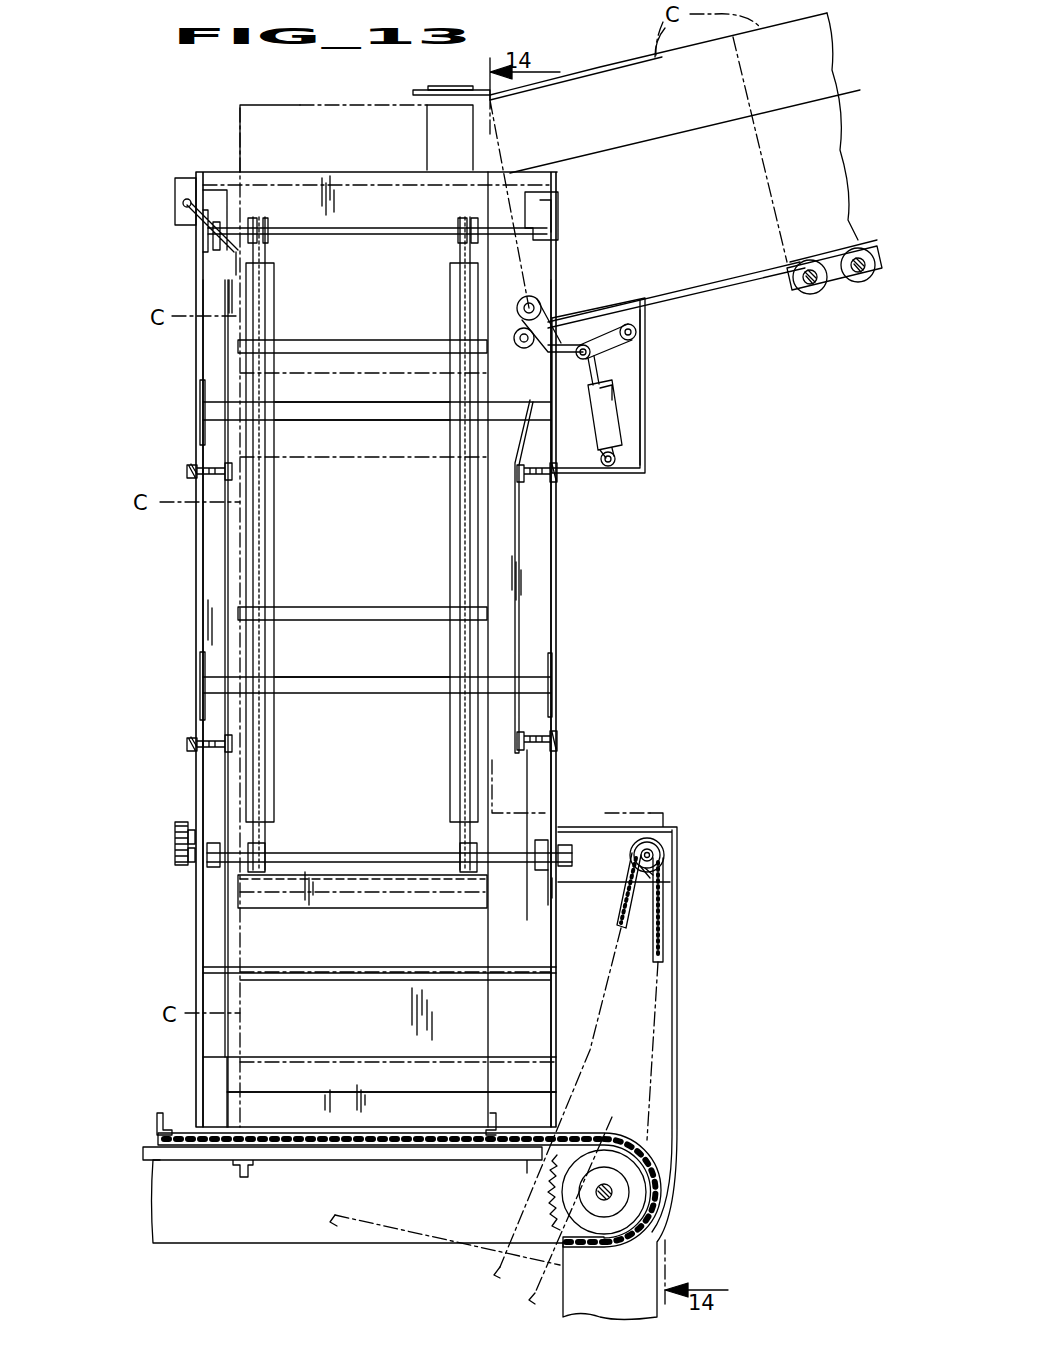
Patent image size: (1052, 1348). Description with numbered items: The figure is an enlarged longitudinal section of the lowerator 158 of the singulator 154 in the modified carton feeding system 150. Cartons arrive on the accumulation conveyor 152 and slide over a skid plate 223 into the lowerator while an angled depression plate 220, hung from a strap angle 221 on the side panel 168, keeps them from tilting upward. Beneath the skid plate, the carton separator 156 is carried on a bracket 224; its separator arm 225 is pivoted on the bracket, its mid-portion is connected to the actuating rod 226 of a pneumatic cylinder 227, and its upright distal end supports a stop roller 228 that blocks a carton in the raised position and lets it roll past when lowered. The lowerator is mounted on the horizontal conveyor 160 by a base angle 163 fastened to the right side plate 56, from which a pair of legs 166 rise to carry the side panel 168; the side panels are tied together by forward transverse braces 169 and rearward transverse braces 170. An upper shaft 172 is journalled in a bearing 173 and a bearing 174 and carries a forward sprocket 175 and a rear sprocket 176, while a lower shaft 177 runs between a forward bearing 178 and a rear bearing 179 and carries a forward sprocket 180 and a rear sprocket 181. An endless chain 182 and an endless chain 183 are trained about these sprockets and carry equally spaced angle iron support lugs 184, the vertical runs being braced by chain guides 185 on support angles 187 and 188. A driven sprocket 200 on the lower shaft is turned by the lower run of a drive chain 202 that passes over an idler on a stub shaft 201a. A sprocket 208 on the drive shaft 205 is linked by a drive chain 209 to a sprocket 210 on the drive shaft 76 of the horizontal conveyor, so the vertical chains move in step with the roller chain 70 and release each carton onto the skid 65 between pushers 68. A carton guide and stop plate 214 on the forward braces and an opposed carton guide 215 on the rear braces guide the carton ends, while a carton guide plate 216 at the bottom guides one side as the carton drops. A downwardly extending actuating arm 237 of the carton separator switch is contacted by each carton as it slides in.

The modified carton feeding system 150 is at (118, 422).
The accumulation conveyor 152 is at (828, 295).
The singulator 154 is at (178, 350).
The carton separator 156 is at (652, 403).
The lowerator 158 is at (190, 376).
The horizontal conveyor 160 is at (680, 1153).
The base angle 163 is at (386, 1108).
The skid 65 is at (308, 1132).
The pushers 68 is at (157, 1119).
The endless roller chain 70 is at (160, 1140).
The right side plate 56 is at (160, 1202).
The drive shaft 76 is at (598, 1190).
The legs 166 is at (208, 604).
The side panel 168 is at (516, 777).
The transverse braces 169 is at (190, 468).
The transverse braces 170 is at (557, 478).
The upper shaft 172 is at (398, 234).
The bearing 173 is at (175, 190).
The bearing 174 is at (548, 217).
The forward sprocket 175 is at (298, 208).
The rear sprocket 176 is at (468, 228).
The lower shaft 177 is at (352, 850).
The forward bearing 178 is at (215, 870).
The rear bearing 179 is at (540, 849).
The forward sprocket 180 is at (263, 852).
The rear sprocket 181 is at (462, 852).
The endless chain 182 is at (263, 503).
The endless chain 183 is at (462, 512).
The support lugs 184 is at (328, 340).
The chain guides 185 is at (276, 778).
The support angle 187 is at (388, 417).
The support angle 188 is at (363, 689).
The driven sprocket 200 is at (186, 866).
The stub shaft 201a is at (186, 840).
The drive chain 202 is at (180, 822).
The drive shaft 205 is at (656, 857).
The sprocket 208 is at (660, 872).
The drive chain 209 is at (664, 915).
The sprocket 210 is at (590, 1152).
The carton guide and stop plate 214 is at (226, 572).
The carton guide 215 is at (516, 572).
The carton guide plate 216 is at (395, 1002).
The angled depression plate 220 is at (585, 70).
The strap angle 221 is at (440, 131).
The skid plate 223 is at (750, 275).
The bracket 224 is at (646, 456).
The separator arm 225 is at (600, 352).
The actuating rod 226 is at (601, 366).
The pneumatic cylinder 227 is at (612, 431).
The stop roller 228 is at (538, 304).
The actuating arm 237 is at (240, 257).